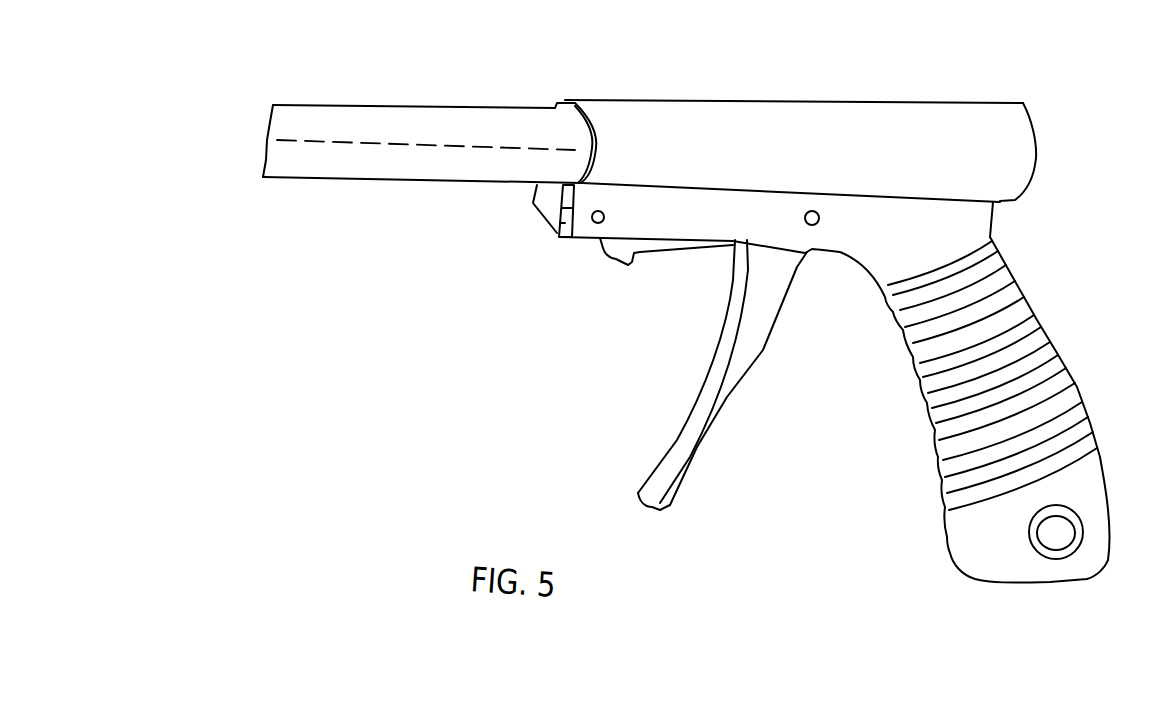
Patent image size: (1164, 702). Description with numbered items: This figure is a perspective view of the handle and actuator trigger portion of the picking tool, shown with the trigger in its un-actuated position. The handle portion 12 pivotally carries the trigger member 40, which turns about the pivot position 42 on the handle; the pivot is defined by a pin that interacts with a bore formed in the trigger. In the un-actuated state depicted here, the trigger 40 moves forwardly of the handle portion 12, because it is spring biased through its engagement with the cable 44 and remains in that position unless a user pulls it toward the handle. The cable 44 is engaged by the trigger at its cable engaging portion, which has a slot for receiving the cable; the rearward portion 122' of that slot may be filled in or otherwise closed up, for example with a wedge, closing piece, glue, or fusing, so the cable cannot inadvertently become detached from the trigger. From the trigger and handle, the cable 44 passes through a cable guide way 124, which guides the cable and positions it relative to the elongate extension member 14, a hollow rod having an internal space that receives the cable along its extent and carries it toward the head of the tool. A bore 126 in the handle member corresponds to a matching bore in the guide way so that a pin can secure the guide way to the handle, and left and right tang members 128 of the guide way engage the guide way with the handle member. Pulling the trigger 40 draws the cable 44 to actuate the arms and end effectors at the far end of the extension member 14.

The handle portion 12 is at (940, 468).
The elongate extension member 14 is at (367, 110).
The trigger member 40 is at (718, 438).
The pivot position 42 is at (817, 212).
The cable 44 is at (467, 147).
The rearward portion of slot 122' is at (666, 273).
The cable guide way 124 is at (550, 202).
The bore 126 is at (592, 224).
The tang member 128 is at (555, 235).